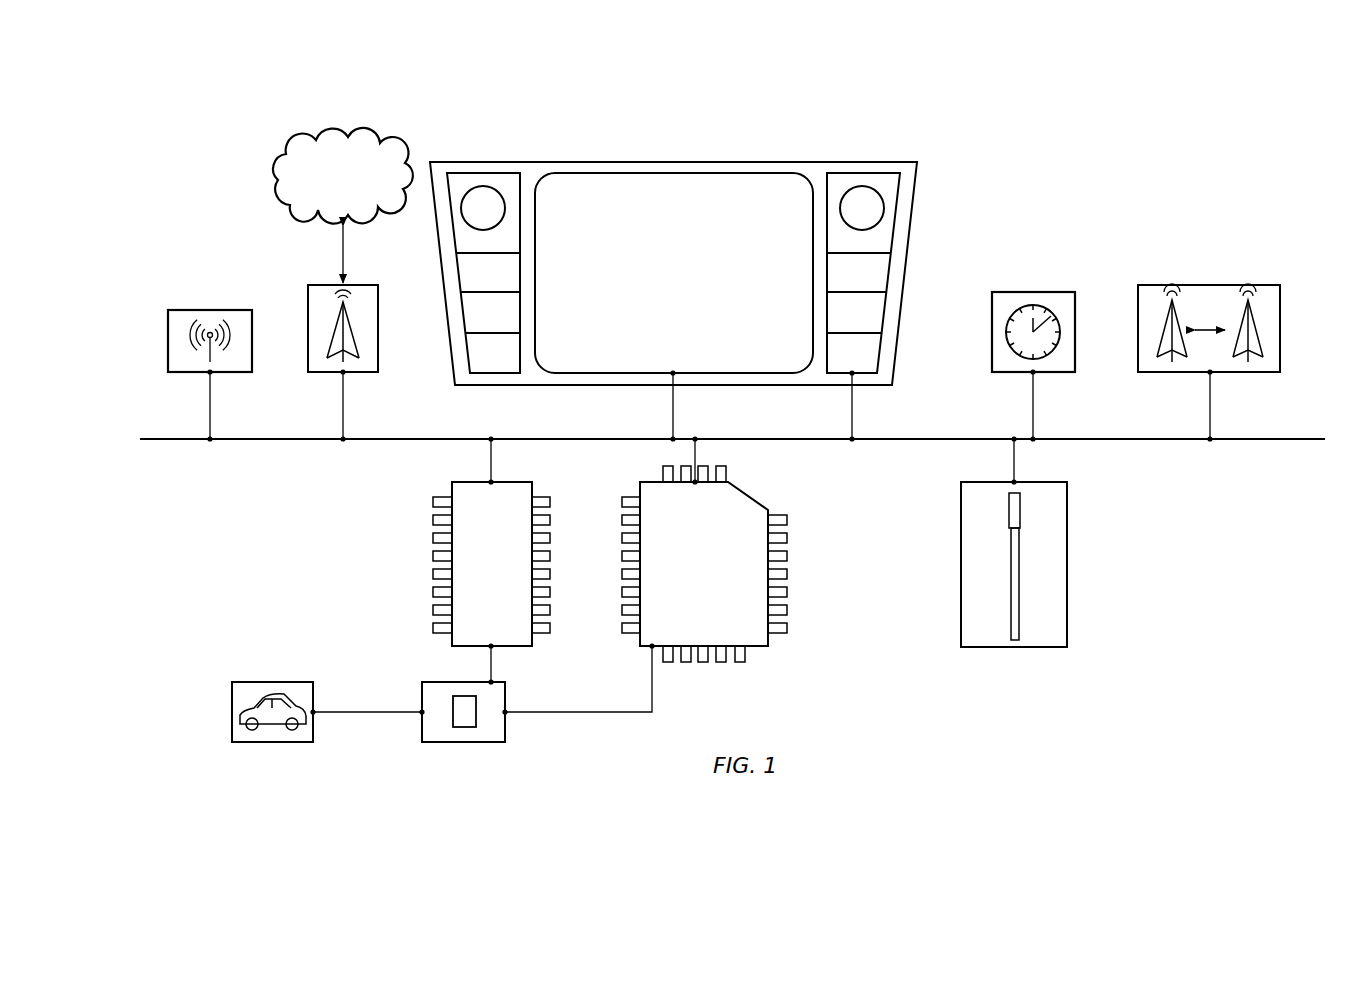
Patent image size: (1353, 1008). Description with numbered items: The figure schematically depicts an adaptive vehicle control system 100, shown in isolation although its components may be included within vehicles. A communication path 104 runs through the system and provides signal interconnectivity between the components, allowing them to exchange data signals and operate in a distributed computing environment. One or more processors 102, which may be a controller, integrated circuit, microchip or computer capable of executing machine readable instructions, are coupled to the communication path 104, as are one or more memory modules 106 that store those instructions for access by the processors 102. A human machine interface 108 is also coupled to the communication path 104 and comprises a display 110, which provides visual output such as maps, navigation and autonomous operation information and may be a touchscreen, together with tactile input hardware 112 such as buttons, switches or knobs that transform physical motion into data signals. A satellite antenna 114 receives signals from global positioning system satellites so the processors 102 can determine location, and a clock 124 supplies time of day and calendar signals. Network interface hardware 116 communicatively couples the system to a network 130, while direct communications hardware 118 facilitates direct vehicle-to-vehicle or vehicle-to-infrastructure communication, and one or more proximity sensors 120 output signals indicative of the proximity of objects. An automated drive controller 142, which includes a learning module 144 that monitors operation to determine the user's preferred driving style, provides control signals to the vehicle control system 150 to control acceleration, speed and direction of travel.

The adaptive vehicle control system 100 is at (1216, 99).
The processors 102 is at (768, 641).
The communication path 104 is at (402, 441).
The memory modules 106 is at (452, 641).
The human machine interface 108 is at (679, 257).
The display 110 is at (673, 188).
The tactile input hardware 112 is at (679, 231).
The satellite antenna 114 is at (1015, 648).
The network interface hardware 116 is at (308, 292).
The direct communications hardware 118 is at (1209, 285).
The proximity sensors 120 is at (208, 310).
The clock 124 is at (1034, 292).
The network 130 is at (272, 176).
The automated drive controller 142 is at (505, 725).
The learning module 144 is at (462, 728).
The vehicle control system 150 is at (270, 682).